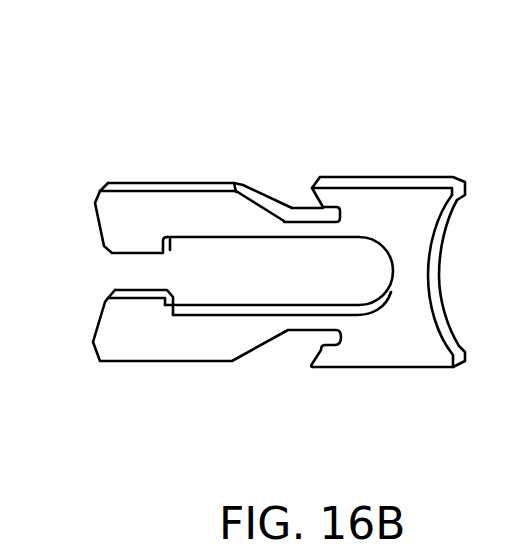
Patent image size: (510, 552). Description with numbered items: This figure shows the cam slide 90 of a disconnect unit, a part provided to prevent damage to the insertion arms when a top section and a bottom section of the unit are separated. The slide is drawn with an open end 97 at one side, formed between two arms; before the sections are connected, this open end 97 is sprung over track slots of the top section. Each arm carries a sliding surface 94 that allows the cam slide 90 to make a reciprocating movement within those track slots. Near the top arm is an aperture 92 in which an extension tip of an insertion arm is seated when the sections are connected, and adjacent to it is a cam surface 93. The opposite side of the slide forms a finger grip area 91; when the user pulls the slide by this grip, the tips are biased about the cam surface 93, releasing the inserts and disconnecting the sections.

The cam slide section 90 is at (242, 228).
The finger grip area 91 is at (427, 369).
The aperture 92 is at (291, 207).
The cam surface 93 is at (243, 184).
The sliding surface 94 is at (246, 239).
The open end 97 is at (140, 268).